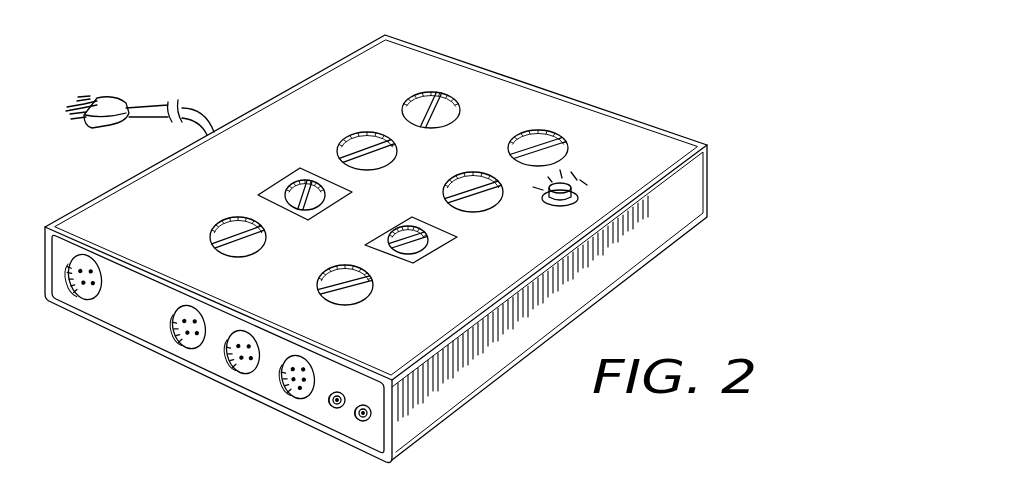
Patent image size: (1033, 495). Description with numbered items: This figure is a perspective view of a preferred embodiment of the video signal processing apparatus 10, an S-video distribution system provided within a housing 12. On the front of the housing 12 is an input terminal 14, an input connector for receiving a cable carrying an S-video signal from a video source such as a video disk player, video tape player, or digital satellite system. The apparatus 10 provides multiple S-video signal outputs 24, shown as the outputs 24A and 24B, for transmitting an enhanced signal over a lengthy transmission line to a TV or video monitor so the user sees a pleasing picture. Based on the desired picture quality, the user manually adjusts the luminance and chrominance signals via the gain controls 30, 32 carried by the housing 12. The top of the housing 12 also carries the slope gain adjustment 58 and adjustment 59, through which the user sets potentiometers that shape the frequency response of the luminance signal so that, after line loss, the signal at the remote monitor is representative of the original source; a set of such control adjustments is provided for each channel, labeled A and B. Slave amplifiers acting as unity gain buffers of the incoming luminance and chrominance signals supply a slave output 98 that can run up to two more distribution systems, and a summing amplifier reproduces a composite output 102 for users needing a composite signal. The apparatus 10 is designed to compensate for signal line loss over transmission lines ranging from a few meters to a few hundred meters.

The video signal processing apparatus 10 is at (381, 258).
The housing 12 is at (463, 387).
The input terminal 14 is at (85, 298).
The S-video signal outputs 24 is at (209, 347).
The S-video signal output 24A is at (177, 342).
The S-video signal output 24B is at (230, 368).
The gain control 30 is at (225, 226).
The gain control 32 is at (288, 177).
The slope gain adjustment 58 is at (365, 133).
The adjustment 59 is at (376, 207).
The slave output 98 is at (297, 400).
The composite output 102 is at (345, 410).